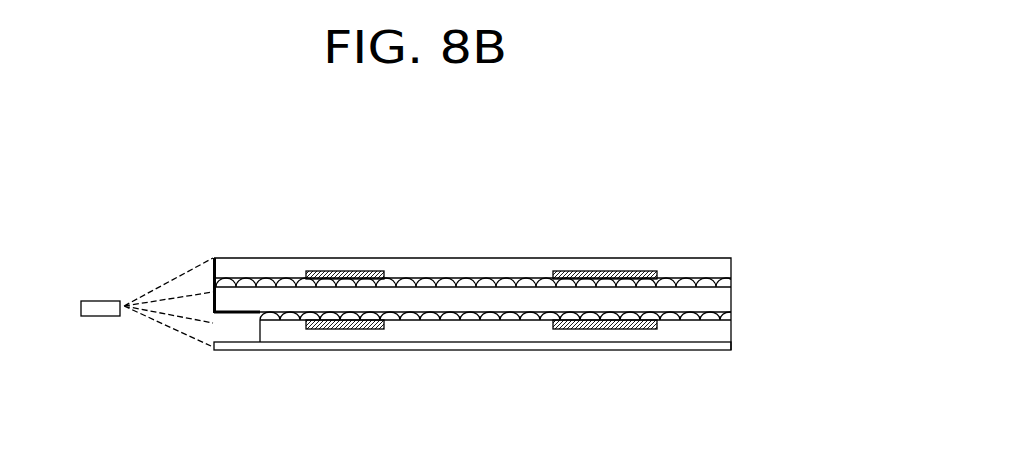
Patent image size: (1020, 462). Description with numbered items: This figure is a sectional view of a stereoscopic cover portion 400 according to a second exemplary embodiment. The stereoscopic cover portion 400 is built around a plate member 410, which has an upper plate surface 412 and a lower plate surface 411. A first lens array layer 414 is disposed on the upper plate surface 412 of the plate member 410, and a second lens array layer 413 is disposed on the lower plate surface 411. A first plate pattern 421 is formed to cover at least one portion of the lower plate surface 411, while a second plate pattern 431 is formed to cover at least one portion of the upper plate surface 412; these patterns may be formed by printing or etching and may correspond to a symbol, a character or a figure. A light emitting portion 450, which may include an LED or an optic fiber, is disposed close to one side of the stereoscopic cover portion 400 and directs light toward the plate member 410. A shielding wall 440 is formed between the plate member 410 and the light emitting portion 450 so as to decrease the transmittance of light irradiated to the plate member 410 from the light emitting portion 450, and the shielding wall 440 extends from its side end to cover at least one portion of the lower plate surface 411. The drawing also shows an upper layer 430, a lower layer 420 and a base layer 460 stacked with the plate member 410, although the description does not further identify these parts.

The stereoscopic cover portion 400 is at (722, 213).
The plate member 410 is at (715, 300).
The lower plate surface 411 is at (722, 309).
The upper plate surface 412 is at (719, 290).
The second lens array layer 413 is at (727, 319).
The first lens array layer 414 is at (728, 281).
The lower panel 420 is at (707, 331).
The first plate pattern 421 is at (593, 326).
The upper panel 430 is at (718, 261).
The second plate pattern 431 is at (585, 275).
The shielding wall 440 is at (210, 281).
The light emitting portion 450 is at (96, 300).
The base plate 460 is at (663, 346).